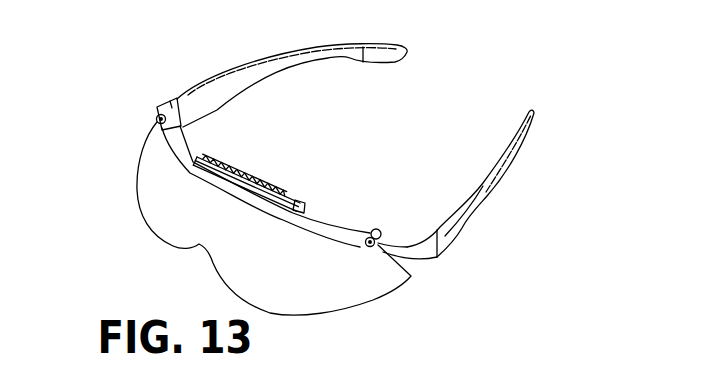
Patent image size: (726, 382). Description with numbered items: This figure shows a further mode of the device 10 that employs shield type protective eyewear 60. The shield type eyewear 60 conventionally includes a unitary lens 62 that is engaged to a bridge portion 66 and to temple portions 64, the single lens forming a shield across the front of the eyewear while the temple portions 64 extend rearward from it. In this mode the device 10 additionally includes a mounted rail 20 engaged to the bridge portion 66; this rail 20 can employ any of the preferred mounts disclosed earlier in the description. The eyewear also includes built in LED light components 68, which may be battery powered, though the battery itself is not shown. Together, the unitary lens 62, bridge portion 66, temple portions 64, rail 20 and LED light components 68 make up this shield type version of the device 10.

The device 10 is at (597, 75).
The mounted rail 20 is at (276, 177).
The shield type protective eyewear 60 is at (158, 106).
The unitary lens 62 is at (152, 200).
The temple portions 64 is at (212, 76).
The bridge portion 66 is at (345, 225).
The LED light components 68 is at (155, 117).